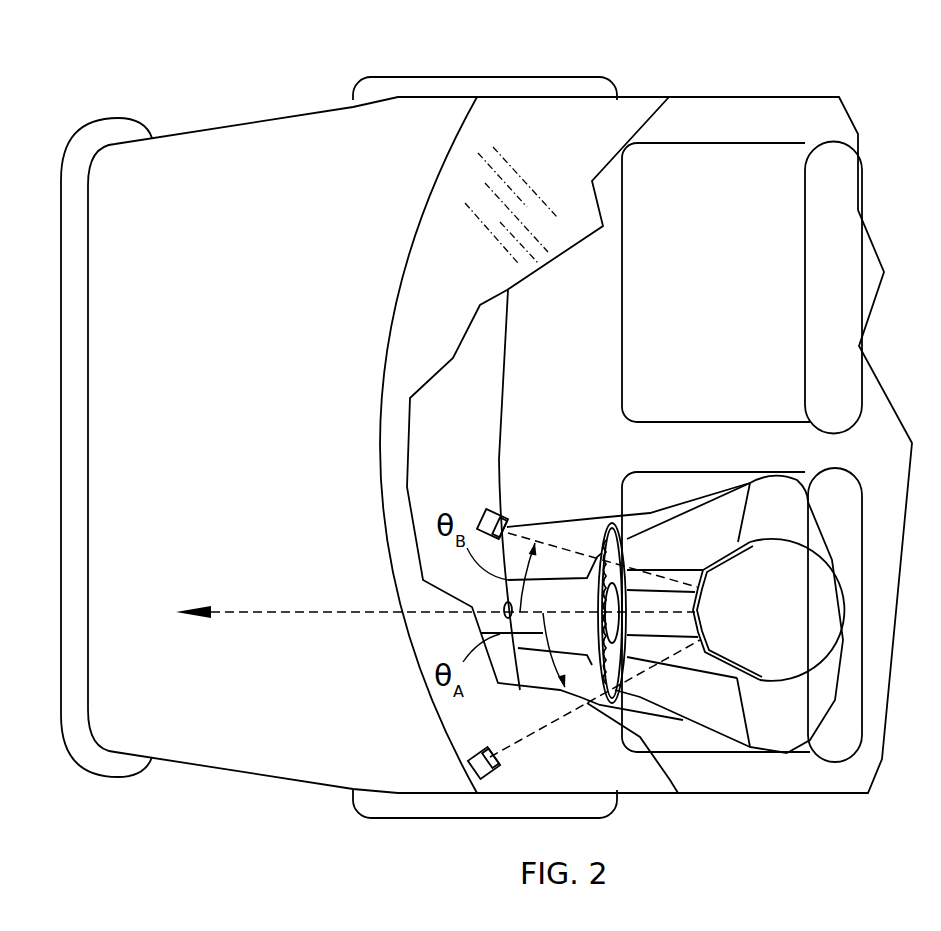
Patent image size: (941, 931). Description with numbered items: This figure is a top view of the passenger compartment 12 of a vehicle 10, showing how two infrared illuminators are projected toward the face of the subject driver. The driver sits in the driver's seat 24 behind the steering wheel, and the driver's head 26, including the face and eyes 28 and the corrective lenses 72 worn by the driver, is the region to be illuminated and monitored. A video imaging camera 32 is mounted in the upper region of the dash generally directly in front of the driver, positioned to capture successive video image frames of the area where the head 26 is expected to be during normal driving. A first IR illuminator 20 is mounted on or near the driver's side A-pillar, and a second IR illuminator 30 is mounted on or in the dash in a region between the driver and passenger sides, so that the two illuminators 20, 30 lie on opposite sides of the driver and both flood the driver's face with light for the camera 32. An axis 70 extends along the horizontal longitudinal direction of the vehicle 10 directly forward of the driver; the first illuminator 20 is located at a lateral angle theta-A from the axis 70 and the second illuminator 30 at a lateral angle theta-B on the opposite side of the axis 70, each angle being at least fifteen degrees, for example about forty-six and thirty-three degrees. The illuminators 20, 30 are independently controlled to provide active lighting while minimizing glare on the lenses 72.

The vehicle 10 is at (220, 97).
The passenger compartment 12 is at (592, 355).
The first infrared illuminator 20 is at (491, 773).
The driver's seat 24 is at (850, 502).
The head 26 is at (763, 614).
The eyes 28 is at (697, 585).
The second infrared illuminator 30 is at (508, 523).
The video imaging camera 32 is at (503, 607).
The axis 70 is at (339, 614).
The corrective lenses 72 is at (702, 570).